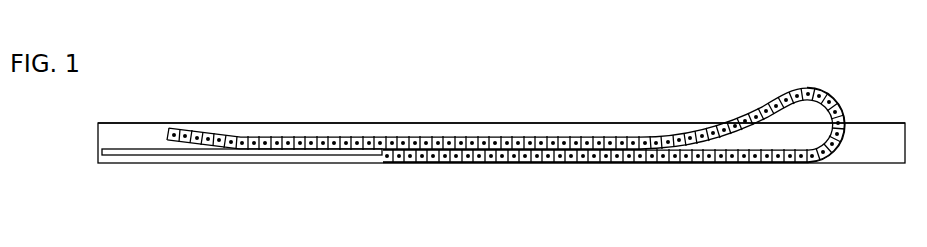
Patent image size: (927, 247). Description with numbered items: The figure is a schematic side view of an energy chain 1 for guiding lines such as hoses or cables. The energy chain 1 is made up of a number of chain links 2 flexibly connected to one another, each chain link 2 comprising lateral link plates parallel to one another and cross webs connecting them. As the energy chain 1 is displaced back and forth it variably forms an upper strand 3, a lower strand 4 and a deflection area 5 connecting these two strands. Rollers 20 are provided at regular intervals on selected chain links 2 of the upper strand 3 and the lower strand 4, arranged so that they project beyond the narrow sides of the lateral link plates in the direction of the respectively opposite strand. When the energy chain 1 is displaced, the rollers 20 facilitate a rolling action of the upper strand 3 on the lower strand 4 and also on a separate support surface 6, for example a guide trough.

The energy chain 1 is at (248, 82).
The chain link 2 is at (781, 102).
The upper strand 3 is at (344, 122).
The lower strand 4 is at (445, 166).
The deflection area 5 is at (846, 113).
The support surface 6 is at (133, 147).
The roller 20 is at (528, 145).